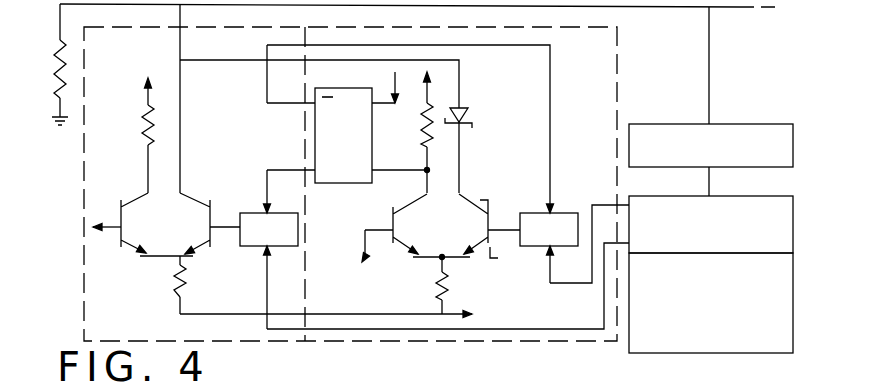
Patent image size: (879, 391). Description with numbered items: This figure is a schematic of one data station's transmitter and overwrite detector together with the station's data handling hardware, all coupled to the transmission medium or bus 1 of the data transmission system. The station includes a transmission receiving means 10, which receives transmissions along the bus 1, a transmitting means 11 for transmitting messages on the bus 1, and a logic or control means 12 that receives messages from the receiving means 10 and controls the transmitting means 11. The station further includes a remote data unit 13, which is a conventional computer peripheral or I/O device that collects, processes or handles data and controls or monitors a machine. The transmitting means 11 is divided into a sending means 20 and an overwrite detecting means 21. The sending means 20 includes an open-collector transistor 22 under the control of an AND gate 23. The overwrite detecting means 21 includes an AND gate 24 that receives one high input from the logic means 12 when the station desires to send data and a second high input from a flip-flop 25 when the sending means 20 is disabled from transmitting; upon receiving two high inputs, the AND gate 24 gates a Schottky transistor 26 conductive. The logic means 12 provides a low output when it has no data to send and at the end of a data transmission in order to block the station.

The bus 1 is at (215, 5).
The transmission receiving means 10 is at (688, 124).
The transmitting means 11 is at (76, 224).
The logic or control means 12 is at (688, 196).
The remote data unit 13 is at (700, 353).
The sending means 20 is at (280, 342).
The overwrite detecting means 21 is at (470, 342).
The open-collector transistor 22 is at (200, 250).
The AND gate 23 is at (247, 200).
The AND gate 24 is at (532, 200).
The flip-flop 25 is at (356, 185).
The Schottky transistor 26 is at (478, 261).